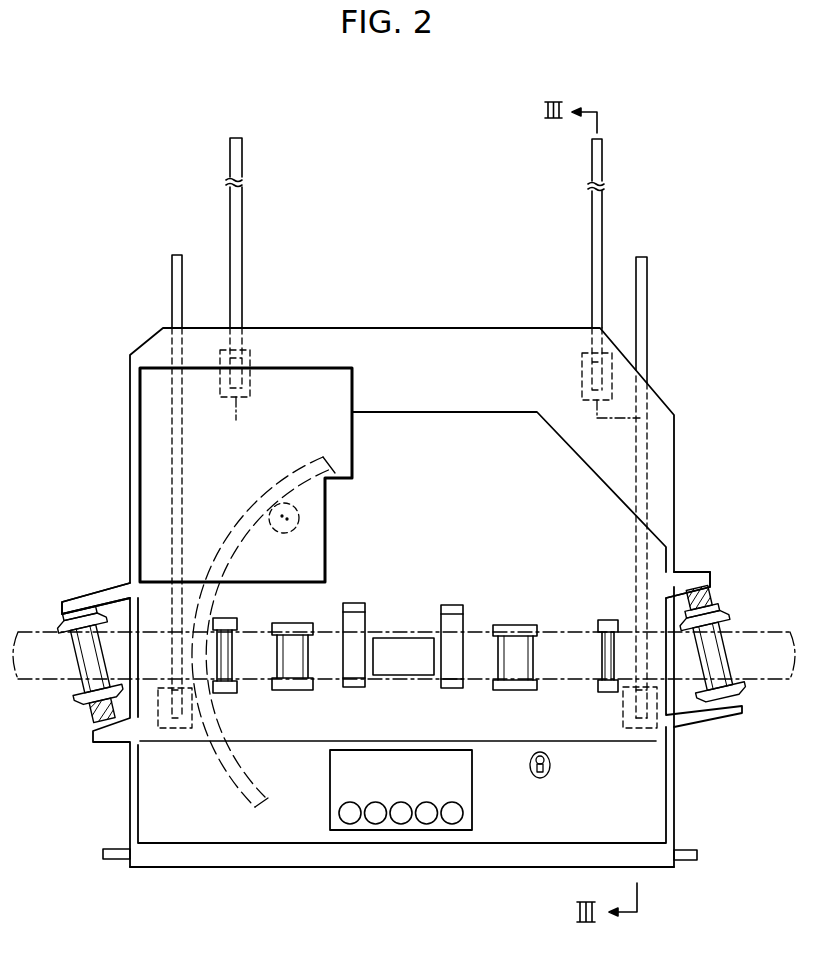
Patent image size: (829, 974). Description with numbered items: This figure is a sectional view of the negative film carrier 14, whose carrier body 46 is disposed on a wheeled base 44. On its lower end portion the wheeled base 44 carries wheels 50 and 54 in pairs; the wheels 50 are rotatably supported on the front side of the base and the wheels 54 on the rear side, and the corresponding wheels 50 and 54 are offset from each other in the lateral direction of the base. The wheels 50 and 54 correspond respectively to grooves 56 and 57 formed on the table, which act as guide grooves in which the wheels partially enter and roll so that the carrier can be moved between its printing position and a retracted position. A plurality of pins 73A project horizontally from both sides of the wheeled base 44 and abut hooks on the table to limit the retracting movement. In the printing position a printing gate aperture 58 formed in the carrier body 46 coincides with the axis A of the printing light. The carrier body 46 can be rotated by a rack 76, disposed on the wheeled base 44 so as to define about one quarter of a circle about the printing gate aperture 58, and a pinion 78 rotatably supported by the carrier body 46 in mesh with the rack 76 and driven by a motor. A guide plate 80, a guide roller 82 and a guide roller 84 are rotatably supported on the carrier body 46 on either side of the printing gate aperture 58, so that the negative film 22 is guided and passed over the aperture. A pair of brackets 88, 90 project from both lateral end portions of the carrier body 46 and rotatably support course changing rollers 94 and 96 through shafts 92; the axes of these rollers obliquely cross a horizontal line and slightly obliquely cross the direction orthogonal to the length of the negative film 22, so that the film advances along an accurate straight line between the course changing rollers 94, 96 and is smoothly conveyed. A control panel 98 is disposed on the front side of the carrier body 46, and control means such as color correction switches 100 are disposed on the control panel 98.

The negative film carrier 14 is at (700, 393).
The negative film 22 is at (553, 630).
The wheeled base 44 is at (675, 835).
The carrier body 46 is at (620, 530).
The wheels 50 is at (623, 715).
The wheels 54 is at (582, 375).
The groove 56 is at (179, 274).
The groove 57 is at (232, 216).
The printing gate aperture 58 is at (386, 637).
The pins 73A is at (116, 860).
The rack 76 is at (305, 488).
The pinion 78 is at (283, 534).
The guide plate 80 is at (343, 622).
The guide roller 82 is at (296, 680).
The guide roller 84 is at (233, 653).
The bracket 88 is at (98, 598).
The bracket 90 is at (690, 572).
The shafts 92 is at (88, 712).
The course changing roller 94 is at (80, 672).
The course changing roller 96 is at (727, 632).
The control panel 98 is at (653, 773).
The color correction switches 100 is at (350, 825).
The axis of the printing light A is at (404, 657).